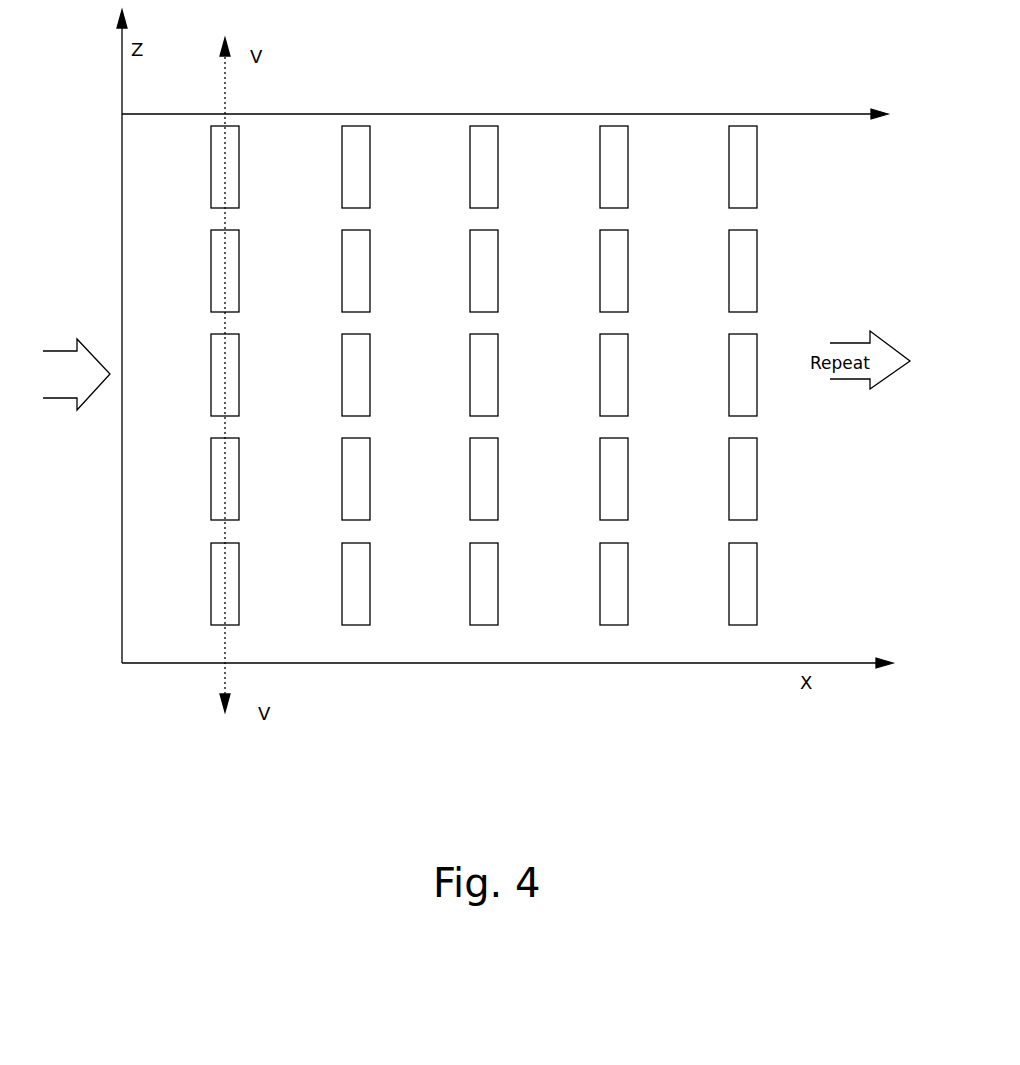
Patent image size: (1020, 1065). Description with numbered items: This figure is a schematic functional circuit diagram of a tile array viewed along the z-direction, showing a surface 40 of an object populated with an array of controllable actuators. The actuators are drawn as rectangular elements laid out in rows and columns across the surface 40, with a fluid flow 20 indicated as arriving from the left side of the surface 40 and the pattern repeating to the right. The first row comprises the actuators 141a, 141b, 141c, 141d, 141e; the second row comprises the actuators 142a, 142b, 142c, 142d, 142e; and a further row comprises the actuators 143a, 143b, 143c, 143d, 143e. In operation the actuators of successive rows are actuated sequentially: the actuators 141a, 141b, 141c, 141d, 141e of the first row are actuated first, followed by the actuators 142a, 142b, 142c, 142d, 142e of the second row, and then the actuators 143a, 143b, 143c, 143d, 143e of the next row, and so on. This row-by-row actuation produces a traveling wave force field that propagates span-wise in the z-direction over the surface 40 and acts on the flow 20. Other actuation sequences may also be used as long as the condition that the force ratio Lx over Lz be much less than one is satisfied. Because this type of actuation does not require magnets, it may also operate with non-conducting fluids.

The fluid flow 20 is at (63, 351).
The surface 40 is at (530, 770).
The actuator of a first row 141a is at (213, 610).
The actuator of a first row 141b is at (370, 602).
The actuator of a first row 141c is at (478, 560).
The actuator of a first row 141d is at (605, 582).
The actuator of a first row 141e is at (738, 590).
The actuator of a second row 142a is at (240, 452).
The actuator of a second row 142b is at (370, 476).
The actuator of a second row 142c is at (498, 500).
The actuator of a second row 142d is at (601, 455).
The actuator of a second row 142e is at (758, 462).
The obstacle in third row 143a is at (212, 370).
The obstacle in third row 143b is at (370, 368).
The obstacle in third row 143c is at (498, 363).
The obstacle in third row 143d is at (601, 362).
The obstacle in third row 143e is at (729, 368).